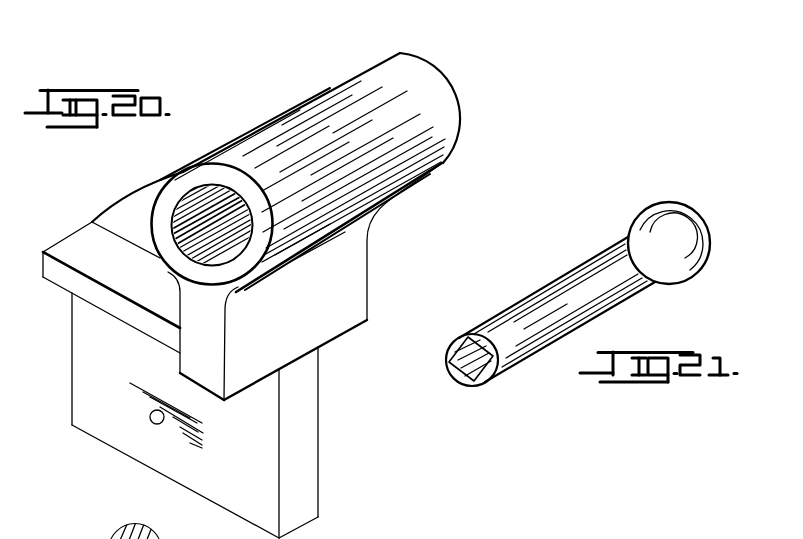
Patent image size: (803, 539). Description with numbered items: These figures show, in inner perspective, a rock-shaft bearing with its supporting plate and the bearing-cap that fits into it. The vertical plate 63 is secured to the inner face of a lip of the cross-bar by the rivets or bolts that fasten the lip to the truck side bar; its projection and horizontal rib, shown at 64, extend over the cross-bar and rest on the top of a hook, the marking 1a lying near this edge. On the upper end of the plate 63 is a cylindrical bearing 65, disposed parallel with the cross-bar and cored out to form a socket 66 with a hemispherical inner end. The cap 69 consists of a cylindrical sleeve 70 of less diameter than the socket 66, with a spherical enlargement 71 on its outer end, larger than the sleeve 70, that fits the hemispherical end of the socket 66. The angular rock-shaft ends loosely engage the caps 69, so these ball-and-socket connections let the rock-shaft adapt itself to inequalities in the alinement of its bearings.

In FIG. 20, the plate 1a is at (181, 352).
In FIG. 20, the vertical plate 63 is at (313, 462).
In FIG. 20, the projection and rib 64 is at (183, 375).
In FIG. 20, the cylindrical bearing 65 is at (310, 107).
In FIG. 20, the socket 66 is at (178, 248).
In FIG. 21, the cap 69 is at (557, 295).
In FIG. 21, the cylindrical sleeve 70 is at (450, 351).
In FIG. 21, the spherical enlargement 71 is at (688, 258).